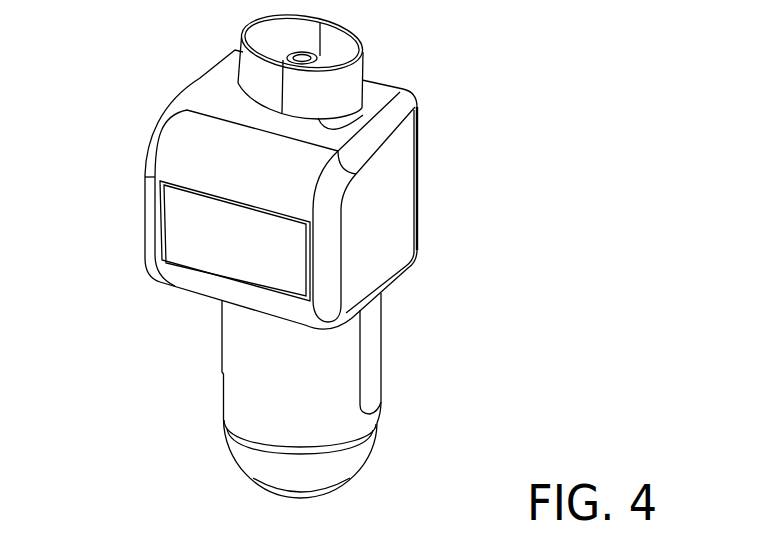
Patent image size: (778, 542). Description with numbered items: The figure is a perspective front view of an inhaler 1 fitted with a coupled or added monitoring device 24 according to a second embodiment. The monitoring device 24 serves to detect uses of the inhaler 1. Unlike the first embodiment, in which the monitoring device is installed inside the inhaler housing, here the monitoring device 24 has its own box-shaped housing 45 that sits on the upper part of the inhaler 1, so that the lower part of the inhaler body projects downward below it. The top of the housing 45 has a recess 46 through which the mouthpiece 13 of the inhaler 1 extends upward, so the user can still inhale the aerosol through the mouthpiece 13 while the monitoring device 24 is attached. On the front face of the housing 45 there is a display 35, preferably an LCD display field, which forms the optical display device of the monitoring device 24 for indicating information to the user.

The inhaler 1 is at (212, 353).
The mouthpiece 13 is at (342, 86).
The monitoring device 24 is at (390, 190).
The display 35 is at (193, 220).
The housing 45 is at (397, 238).
The recess 46 is at (333, 132).